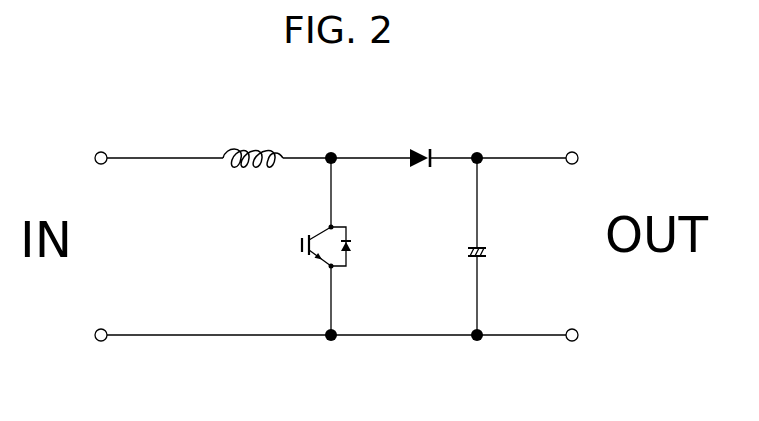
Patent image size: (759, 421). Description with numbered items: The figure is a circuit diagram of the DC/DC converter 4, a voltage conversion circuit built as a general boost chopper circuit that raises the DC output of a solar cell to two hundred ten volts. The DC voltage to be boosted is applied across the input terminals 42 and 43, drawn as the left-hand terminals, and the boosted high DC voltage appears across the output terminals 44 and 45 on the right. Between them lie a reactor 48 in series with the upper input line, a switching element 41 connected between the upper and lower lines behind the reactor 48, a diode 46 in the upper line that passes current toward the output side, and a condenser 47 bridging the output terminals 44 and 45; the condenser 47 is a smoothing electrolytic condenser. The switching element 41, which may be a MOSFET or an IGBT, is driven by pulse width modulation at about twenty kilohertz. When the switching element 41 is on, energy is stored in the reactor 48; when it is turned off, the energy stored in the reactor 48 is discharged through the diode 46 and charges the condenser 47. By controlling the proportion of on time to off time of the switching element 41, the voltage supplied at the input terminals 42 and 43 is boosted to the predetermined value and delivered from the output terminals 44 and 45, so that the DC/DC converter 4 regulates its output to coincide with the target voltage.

The DC/DC converter 4 is at (490, 112).
The switching element 41 is at (352, 235).
The input terminal 42 is at (115, 138).
The input terminal 43 is at (110, 316).
The output terminal 44 is at (572, 140).
The output terminal 45 is at (572, 317).
The diode 46 is at (421, 136).
The condenser 47 is at (496, 234).
The reactor 48 is at (253, 140).